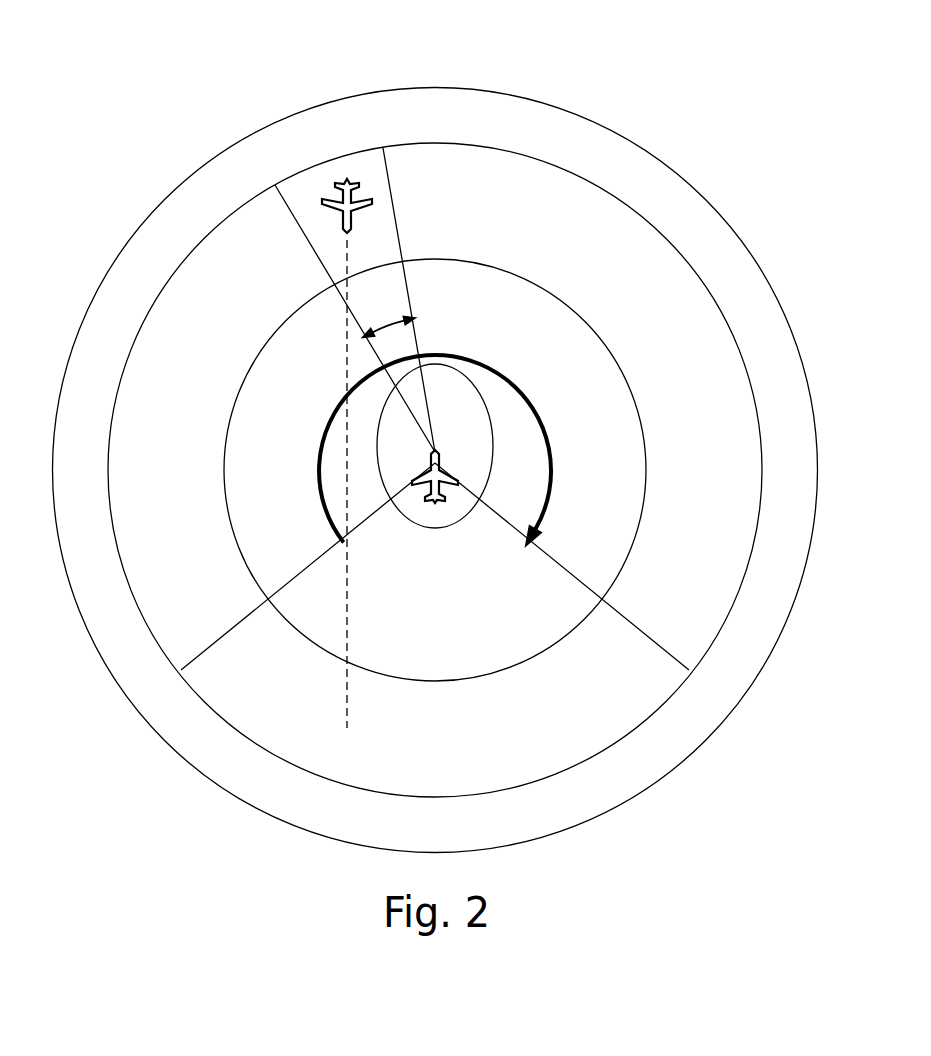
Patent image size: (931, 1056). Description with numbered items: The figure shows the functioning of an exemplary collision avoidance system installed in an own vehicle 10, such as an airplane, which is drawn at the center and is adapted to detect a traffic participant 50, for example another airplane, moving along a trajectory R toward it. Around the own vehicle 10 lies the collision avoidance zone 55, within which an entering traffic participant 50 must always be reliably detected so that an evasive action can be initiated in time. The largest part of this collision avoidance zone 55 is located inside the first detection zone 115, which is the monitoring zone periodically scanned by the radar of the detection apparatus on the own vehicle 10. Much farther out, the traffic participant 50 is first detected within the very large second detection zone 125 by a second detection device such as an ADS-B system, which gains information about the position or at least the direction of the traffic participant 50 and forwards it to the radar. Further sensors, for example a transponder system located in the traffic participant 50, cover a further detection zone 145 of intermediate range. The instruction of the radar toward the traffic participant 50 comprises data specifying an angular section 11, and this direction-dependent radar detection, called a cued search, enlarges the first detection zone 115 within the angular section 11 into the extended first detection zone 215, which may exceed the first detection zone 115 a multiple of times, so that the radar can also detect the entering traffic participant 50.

The own vehicle 10 is at (437, 504).
The angular section 11 is at (390, 318).
The traffic participant 50 is at (347, 177).
The collision avoidance zone 55 is at (485, 400).
The first detection zone 115 is at (549, 438).
The second detection zone 125 is at (460, 87).
The further detection zone 145 is at (450, 682).
The extended first detection zone 215 is at (672, 243).
The trajectory R is at (347, 697).